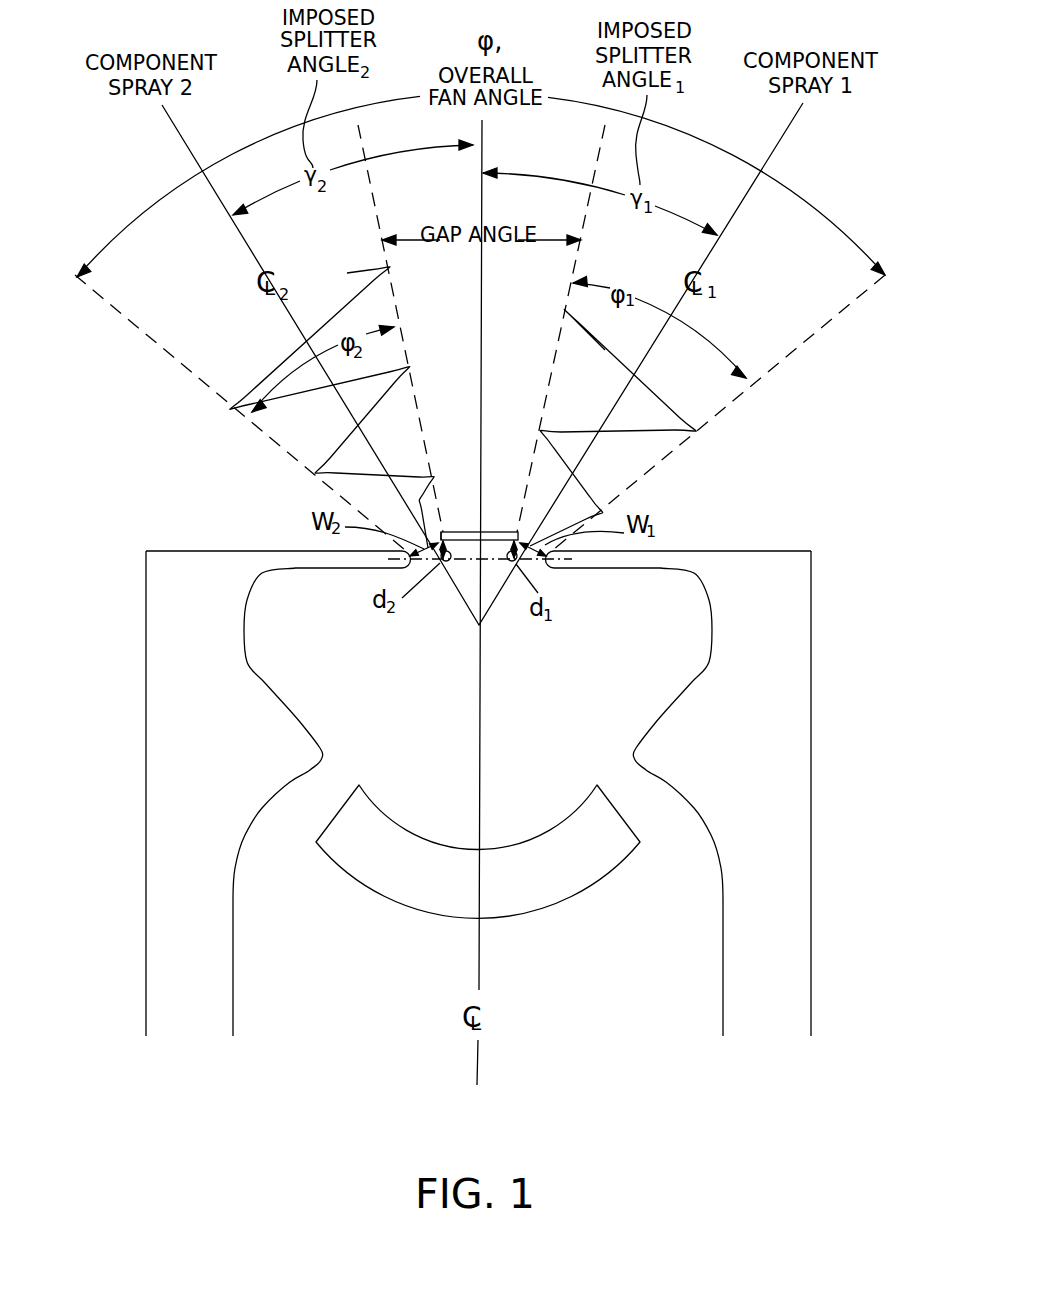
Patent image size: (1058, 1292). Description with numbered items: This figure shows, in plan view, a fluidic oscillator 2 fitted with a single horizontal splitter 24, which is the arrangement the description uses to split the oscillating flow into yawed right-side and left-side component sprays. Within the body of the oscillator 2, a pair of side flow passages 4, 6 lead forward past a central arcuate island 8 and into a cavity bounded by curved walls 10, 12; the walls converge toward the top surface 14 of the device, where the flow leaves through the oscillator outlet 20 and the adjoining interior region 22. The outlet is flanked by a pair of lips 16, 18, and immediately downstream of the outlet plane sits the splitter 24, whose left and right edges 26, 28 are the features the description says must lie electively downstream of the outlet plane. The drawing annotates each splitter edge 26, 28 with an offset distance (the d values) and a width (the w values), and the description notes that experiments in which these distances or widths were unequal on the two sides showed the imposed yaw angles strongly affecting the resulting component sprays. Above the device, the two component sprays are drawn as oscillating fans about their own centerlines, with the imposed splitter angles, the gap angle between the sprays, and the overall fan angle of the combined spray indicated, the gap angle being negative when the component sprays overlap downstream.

The spray nozzle assembly 2 is at (834, 507).
The first fluid passage 4 is at (653, 812).
The second fluid passage 6 is at (297, 800).
The central chamber 8 is at (545, 712).
The first cavity wall 10 is at (718, 636).
The second cavity wall 12 is at (250, 668).
The nozzle body top surface 14 is at (660, 600).
The first lip 16 is at (575, 560).
The second lip 18 is at (402, 557).
The second outlet orifice 20 is at (446, 562).
The nozzle interior 22 is at (490, 558).
The splitter 24 is at (473, 541).
The first splitter edge 26 is at (516, 540).
The second splitter edge 28 is at (442, 540).